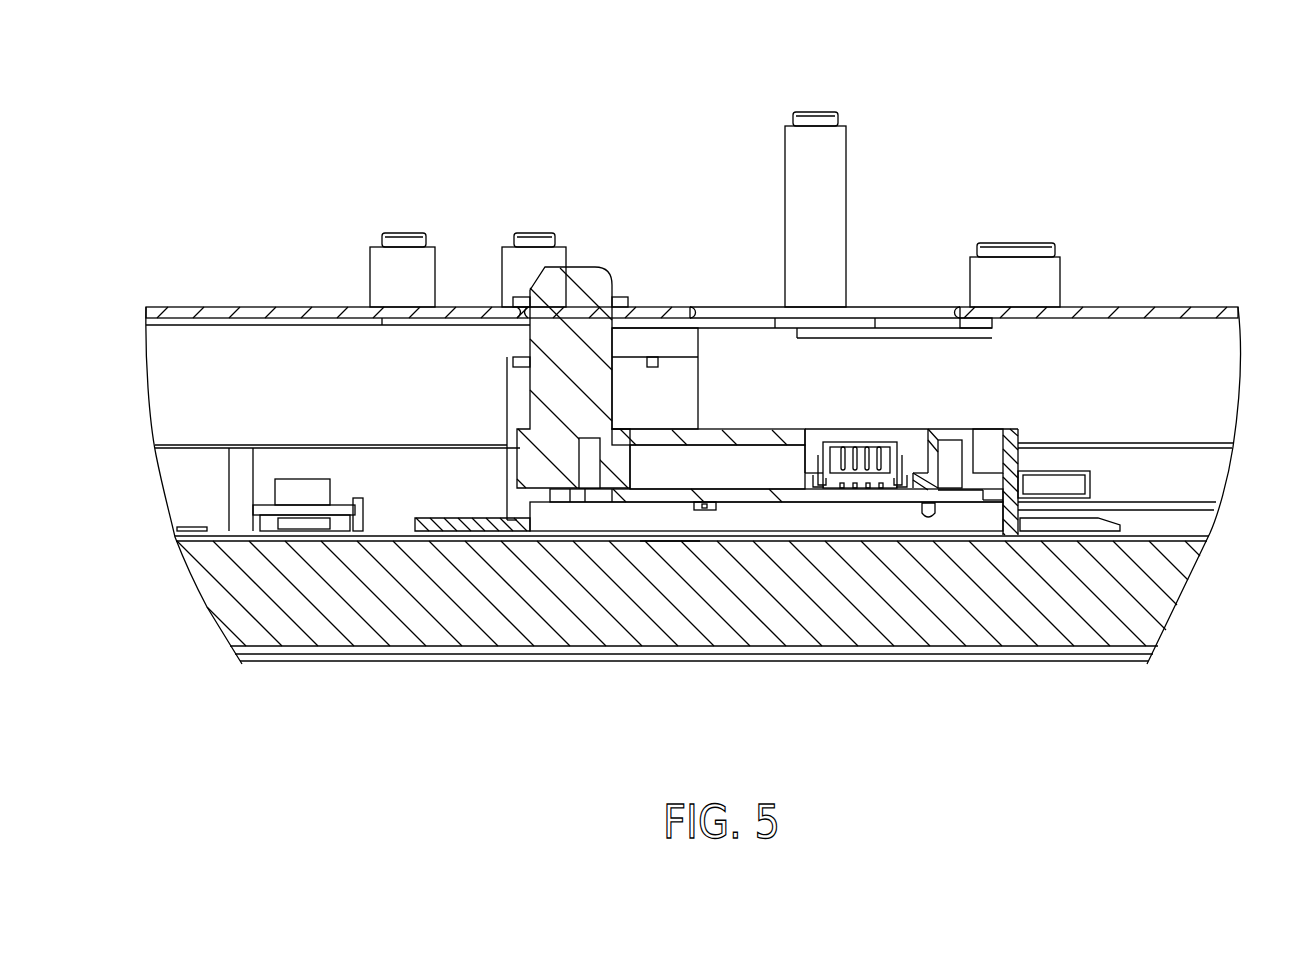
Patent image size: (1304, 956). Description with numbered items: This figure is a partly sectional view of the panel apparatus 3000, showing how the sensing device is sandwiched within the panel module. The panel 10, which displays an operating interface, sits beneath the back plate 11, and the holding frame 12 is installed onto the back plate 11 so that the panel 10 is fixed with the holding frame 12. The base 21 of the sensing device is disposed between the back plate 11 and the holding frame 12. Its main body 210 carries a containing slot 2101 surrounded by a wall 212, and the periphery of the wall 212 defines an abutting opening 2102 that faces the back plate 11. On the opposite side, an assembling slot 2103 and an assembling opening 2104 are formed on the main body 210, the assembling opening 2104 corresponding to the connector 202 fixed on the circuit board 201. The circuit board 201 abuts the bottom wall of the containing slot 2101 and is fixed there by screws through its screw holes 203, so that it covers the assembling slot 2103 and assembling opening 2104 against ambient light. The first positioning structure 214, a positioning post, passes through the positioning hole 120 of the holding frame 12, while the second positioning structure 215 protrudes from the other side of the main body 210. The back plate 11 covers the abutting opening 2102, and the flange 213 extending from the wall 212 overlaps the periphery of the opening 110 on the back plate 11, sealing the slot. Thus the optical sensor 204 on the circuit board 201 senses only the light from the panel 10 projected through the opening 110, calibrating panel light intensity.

The panel apparatus 3000 is at (1128, 109).
The base 21 is at (1128, 366).
The holding frame 12 is at (465, 305).
The panel 10 is at (348, 615).
The back plate 11 is at (396, 536).
The opening 110 is at (673, 545).
The first positioning structure 214 is at (580, 272).
The positioning hole 120 is at (618, 294).
The assembling slot 2103 is at (743, 470).
The assembling opening 2104 is at (818, 440).
The main body 210 is at (995, 412).
The circuit board 201 is at (863, 498).
The containing slot 2101 is at (631, 508).
The abutting opening 2102 is at (565, 540).
The optical sensor 204 is at (708, 512).
The connector 202 is at (888, 444).
The second positioning structure 215 is at (928, 522).
The screw holes 203 is at (952, 502).
The wall 212 is at (1015, 490).
The flange 213 is at (1095, 522).